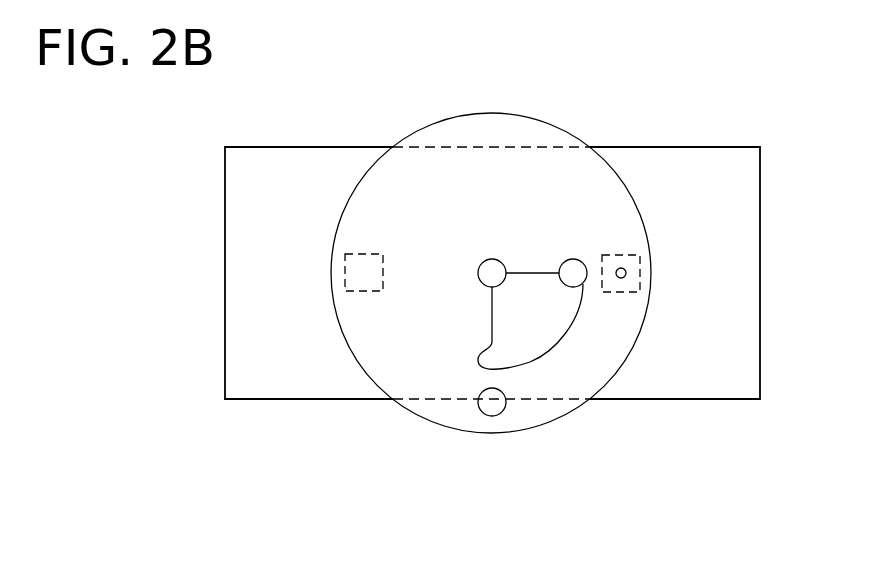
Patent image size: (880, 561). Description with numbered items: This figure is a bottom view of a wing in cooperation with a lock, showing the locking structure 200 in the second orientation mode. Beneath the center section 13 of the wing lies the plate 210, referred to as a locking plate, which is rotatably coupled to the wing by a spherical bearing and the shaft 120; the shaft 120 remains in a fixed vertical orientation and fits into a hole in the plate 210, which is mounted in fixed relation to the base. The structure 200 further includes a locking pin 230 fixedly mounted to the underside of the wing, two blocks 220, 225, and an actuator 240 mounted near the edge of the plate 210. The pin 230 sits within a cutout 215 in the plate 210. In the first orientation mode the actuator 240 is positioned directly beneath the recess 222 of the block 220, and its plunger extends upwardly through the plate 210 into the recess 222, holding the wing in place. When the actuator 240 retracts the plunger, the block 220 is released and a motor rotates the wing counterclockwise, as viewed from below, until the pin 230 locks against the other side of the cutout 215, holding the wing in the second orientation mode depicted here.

The center section 13 is at (695, 147).
The plate 210 is at (406, 135).
The cutout 215 is at (528, 271).
The shaft 120 is at (478, 273).
The block 220 is at (608, 255).
The recess 222 is at (625, 270).
The block 225 is at (358, 292).
The locking pin 230 is at (567, 286).
The actuator 240 is at (479, 406).
The structure 200 is at (605, 457).